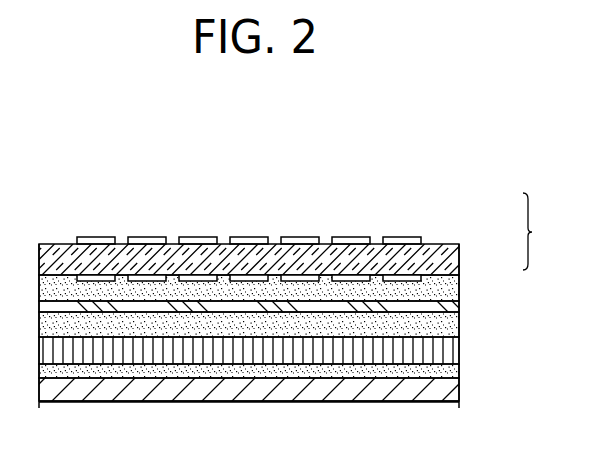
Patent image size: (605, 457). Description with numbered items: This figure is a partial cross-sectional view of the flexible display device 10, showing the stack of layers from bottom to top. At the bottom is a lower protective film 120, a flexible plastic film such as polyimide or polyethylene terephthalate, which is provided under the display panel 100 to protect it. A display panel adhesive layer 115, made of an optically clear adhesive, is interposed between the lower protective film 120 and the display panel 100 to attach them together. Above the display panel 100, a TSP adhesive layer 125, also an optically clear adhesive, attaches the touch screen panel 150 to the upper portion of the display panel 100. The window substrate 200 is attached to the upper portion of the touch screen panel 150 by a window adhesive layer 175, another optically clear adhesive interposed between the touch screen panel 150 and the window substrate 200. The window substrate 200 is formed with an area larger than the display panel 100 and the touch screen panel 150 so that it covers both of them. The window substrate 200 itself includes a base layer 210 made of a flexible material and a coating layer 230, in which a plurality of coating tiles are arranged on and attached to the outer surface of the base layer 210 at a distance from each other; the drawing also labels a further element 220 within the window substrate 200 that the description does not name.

The flexible display device 10 is at (405, 185).
The display panel 100 is at (440, 350).
The display panel adhesive layer 115 is at (445, 371).
The lower protective film 120 is at (449, 390).
The TSP adhesive layer 125 is at (440, 327).
The touch screen panel 150 is at (443, 304).
The window adhesive layer 175 is at (438, 291).
The window substrate 200 is at (545, 231).
The base layer 210 is at (445, 262).
The second electrode 220 is at (442, 278).
The coating layer 230 is at (423, 238).